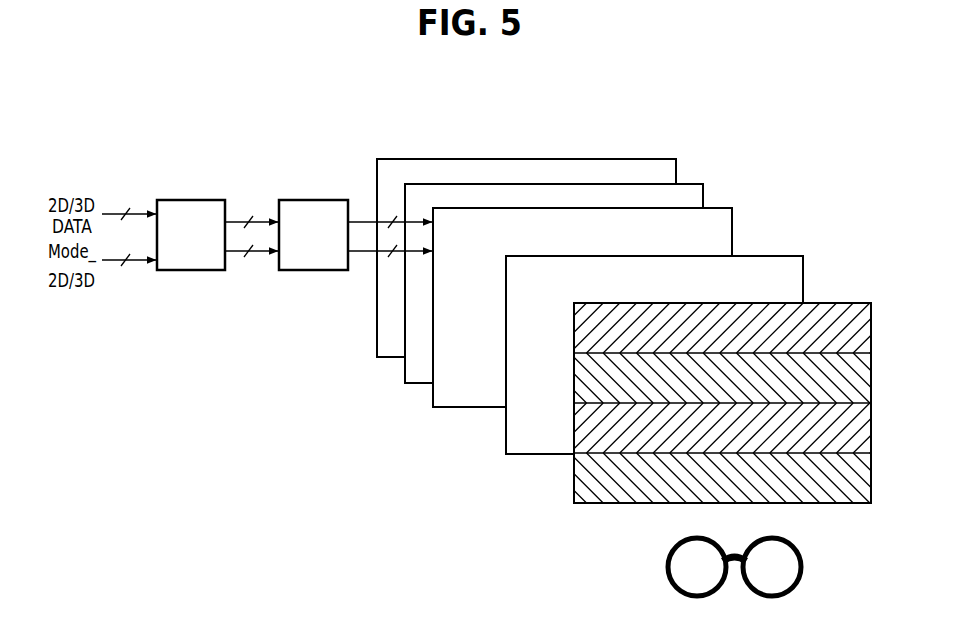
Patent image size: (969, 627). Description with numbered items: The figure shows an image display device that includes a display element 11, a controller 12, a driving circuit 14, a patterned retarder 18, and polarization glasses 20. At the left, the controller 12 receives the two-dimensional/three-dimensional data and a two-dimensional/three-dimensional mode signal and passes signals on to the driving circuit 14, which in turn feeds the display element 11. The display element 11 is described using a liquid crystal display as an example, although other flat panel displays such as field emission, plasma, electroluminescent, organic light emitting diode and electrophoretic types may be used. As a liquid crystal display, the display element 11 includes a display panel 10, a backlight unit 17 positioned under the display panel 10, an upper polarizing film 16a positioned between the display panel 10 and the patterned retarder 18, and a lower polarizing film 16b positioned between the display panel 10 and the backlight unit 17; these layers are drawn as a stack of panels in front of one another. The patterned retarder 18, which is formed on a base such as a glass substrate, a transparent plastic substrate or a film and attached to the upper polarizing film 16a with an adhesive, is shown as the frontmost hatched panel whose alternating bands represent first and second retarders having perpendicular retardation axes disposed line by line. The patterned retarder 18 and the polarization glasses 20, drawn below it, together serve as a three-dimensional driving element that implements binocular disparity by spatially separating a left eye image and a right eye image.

The controller 12 is at (182, 245).
The driving circuit 14 is at (304, 245).
The display panel 10 is at (719, 207).
The display element 11 is at (597, 257).
The upper polarizing film 16a is at (772, 255).
The lower polarizing film 16b is at (691, 183).
The backlight unit 17 is at (668, 158).
The patterned retarder 18 is at (839, 302).
The polarization glasses 20 is at (794, 546).